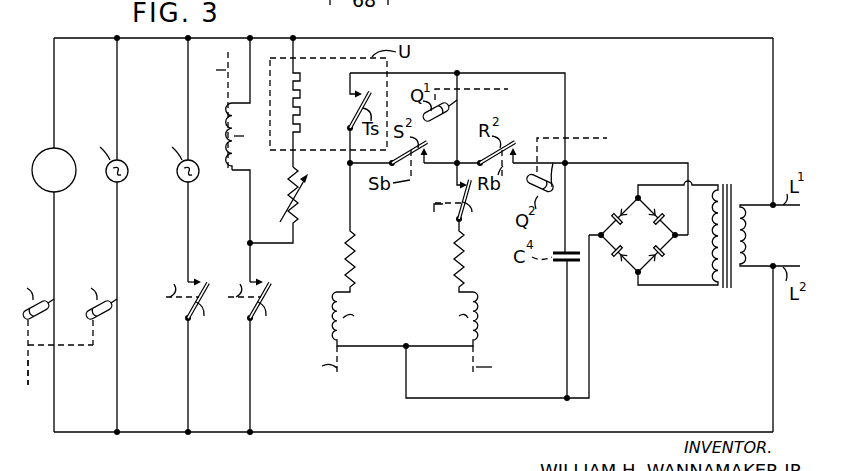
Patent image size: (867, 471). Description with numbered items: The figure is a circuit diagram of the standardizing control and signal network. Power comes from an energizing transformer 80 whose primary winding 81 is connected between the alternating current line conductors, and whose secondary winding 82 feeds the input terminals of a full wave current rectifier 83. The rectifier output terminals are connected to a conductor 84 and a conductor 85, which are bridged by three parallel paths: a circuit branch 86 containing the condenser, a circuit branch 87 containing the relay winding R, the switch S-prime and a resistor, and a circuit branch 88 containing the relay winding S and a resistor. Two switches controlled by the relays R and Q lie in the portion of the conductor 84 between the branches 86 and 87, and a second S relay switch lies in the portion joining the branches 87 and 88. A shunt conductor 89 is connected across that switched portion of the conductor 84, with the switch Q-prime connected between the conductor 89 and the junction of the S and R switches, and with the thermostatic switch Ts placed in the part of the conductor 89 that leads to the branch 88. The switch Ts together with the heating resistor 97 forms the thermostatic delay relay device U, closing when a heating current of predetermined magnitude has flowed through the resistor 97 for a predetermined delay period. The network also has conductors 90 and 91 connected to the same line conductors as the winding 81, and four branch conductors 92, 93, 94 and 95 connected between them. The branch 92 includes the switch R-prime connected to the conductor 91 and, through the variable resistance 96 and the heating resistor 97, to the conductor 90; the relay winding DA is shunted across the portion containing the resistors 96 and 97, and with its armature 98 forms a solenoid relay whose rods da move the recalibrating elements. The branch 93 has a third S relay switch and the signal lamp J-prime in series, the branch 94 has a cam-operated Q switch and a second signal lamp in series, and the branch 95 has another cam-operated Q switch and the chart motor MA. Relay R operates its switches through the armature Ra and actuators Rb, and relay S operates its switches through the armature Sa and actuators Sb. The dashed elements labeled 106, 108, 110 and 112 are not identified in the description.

The energizing transformer 80 is at (719, 266).
The primary winding 81 is at (746, 236).
The secondary winding 82 is at (678, 233).
The full wave current rectifier 83 is at (638, 235).
The conductor 84 is at (655, 163).
The conductor 85 is at (492, 400).
The circuit branch 86 is at (566, 338).
The circuit branch 87 is at (428, 347).
The circuit branch 88 is at (384, 347).
The shunt conductor 89 is at (505, 73).
The conductor 90 is at (693, 38).
The conductor 91 is at (400, 433).
The branch conductor 92 is at (257, 397).
The circuit branch 93 is at (192, 397).
The circuit branch 94 is at (122, 397).
The circuit branch 95 is at (57, 397).
The variable resistance 96 is at (303, 198).
The heating resistor 97 is at (300, 105).
The armature 98 is at (222, 136).
The thermostat assembly 106 is at (465, 89).
The thermostat assembly 108 is at (571, 138).
The thermostat linkage 110 is at (24, 368).
The thermostat linkage 112 is at (40, 397).